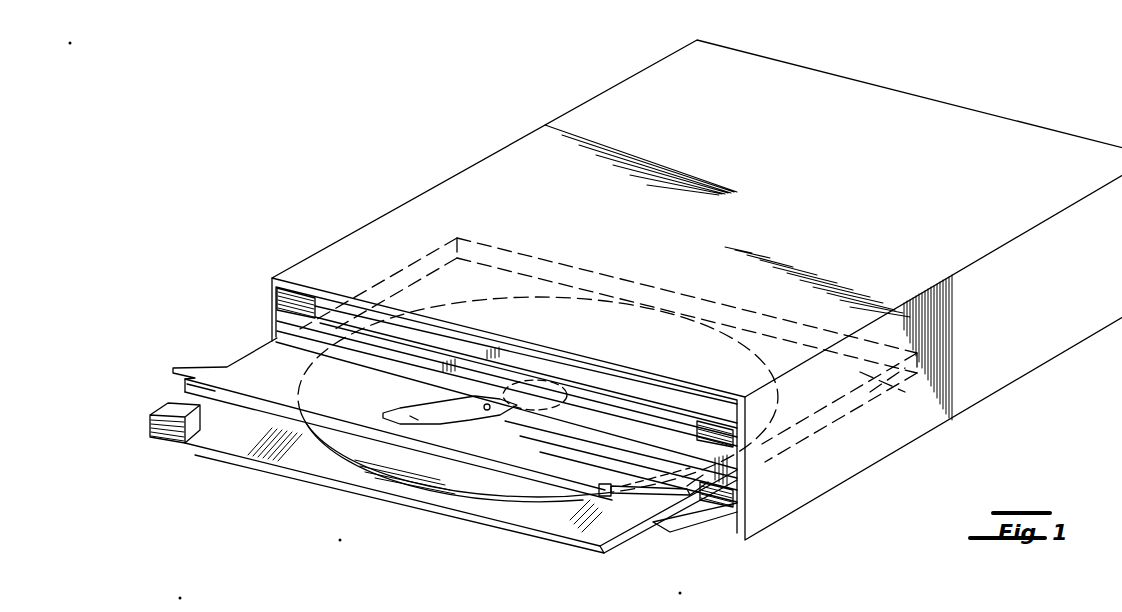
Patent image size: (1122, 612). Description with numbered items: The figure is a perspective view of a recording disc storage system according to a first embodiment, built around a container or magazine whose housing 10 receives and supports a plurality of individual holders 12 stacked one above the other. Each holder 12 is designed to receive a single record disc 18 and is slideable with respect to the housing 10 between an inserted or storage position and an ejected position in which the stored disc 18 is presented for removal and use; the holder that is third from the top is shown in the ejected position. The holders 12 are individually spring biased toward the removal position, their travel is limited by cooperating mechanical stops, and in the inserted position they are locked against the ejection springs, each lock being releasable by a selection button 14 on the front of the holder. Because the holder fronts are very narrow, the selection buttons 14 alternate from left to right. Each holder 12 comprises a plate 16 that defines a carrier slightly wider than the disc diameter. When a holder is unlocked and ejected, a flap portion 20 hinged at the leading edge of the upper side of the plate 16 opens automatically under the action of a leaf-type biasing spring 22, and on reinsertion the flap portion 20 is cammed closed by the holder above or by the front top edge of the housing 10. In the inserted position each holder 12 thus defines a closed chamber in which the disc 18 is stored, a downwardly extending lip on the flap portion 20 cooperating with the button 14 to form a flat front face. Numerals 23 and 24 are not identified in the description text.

The housing 10 is at (868, 452).
The holder 12 is at (264, 304).
The selection button 14 is at (276, 300).
The plate 16 is at (732, 470).
The record disc 18 is at (360, 456).
The flap portion 20 is at (465, 440).
The leaf-type biasing spring 22 is at (480, 404).
The pivot 23 is at (607, 498).
The link 24 is at (705, 472).